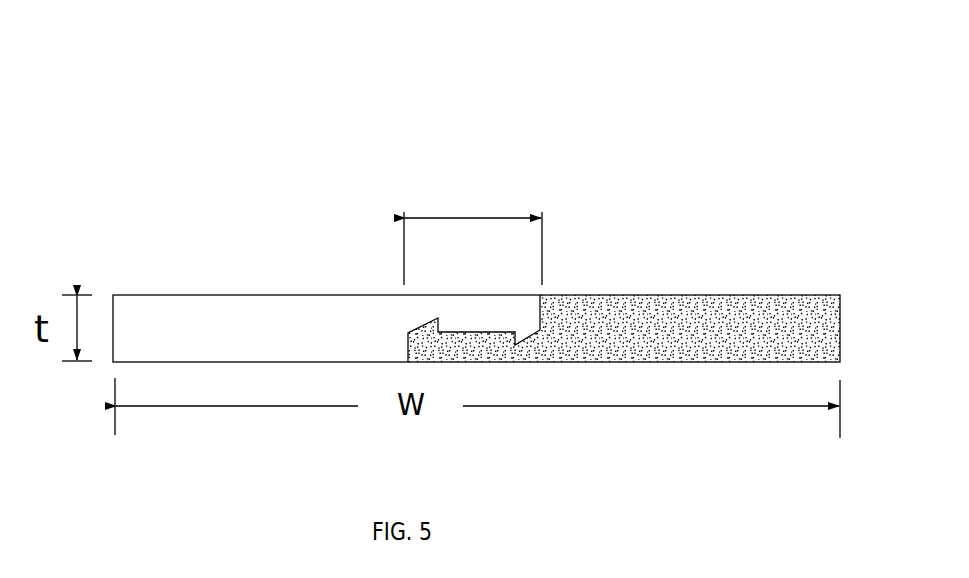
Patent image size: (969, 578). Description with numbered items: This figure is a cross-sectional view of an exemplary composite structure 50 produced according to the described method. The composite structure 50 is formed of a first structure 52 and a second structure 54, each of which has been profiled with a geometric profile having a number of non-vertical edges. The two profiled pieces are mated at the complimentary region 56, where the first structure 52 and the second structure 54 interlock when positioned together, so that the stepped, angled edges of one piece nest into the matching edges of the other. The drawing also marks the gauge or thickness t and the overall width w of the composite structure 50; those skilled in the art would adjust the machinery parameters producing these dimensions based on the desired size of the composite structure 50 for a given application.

The composite structure 50 is at (502, 123).
The first structure 52 is at (180, 295).
The second structure 54 is at (682, 295).
The complimentary region 56 is at (473, 231).